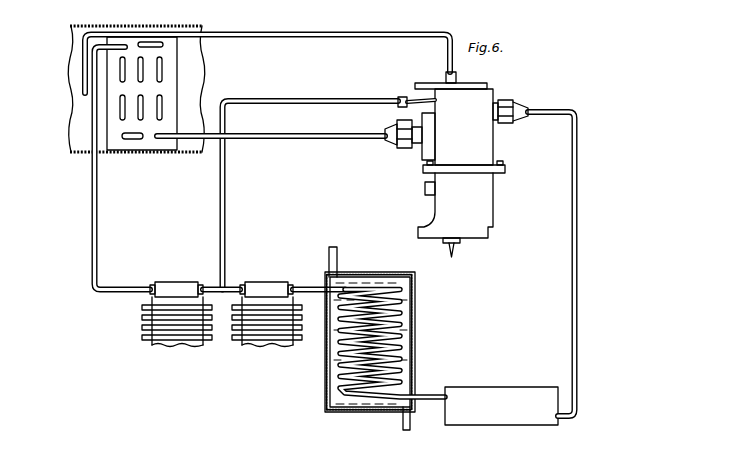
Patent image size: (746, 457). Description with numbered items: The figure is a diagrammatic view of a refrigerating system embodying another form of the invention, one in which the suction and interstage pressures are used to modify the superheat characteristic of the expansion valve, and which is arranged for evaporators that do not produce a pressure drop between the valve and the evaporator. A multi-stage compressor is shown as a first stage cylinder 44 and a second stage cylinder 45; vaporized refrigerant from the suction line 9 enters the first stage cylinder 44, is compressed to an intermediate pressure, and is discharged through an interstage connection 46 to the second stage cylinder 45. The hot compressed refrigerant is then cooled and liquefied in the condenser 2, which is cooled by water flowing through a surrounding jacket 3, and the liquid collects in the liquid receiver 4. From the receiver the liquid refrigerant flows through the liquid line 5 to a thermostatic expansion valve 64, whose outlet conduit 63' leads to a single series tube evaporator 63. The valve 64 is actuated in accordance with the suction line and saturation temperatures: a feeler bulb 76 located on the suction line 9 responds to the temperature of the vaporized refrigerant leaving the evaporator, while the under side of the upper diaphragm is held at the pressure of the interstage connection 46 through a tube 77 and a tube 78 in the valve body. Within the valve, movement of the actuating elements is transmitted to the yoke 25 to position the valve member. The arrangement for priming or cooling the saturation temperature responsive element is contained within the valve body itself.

The condenser 2 is at (397, 320).
The jacket 3 is at (416, 348).
The liquid receiver 4 is at (495, 387).
The liquid line 5 is at (578, 296).
The suction line 9 is at (88, 235).
The yoke 25 is at (446, 55).
The first stage cylinder 44 is at (175, 282).
The second stage cylinder 45 is at (271, 282).
The interstage connection 46 is at (229, 286).
The single series tube evaporator 63 is at (169, 93).
The outlet conduit 63' is at (271, 150).
The thermostatic expansion valve 64 is at (456, 170).
The feeler bulb 76 is at (80, 77).
The tube 77 is at (341, 99).
The tube in the valve body 78 is at (403, 97).